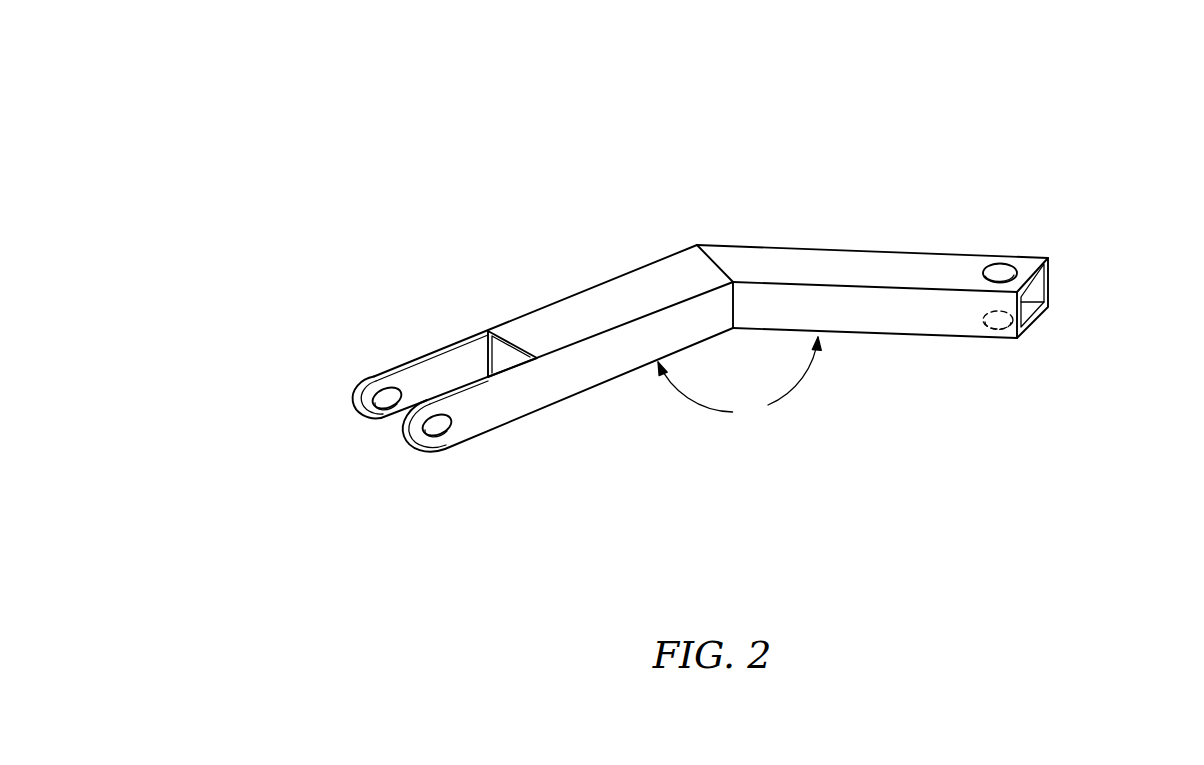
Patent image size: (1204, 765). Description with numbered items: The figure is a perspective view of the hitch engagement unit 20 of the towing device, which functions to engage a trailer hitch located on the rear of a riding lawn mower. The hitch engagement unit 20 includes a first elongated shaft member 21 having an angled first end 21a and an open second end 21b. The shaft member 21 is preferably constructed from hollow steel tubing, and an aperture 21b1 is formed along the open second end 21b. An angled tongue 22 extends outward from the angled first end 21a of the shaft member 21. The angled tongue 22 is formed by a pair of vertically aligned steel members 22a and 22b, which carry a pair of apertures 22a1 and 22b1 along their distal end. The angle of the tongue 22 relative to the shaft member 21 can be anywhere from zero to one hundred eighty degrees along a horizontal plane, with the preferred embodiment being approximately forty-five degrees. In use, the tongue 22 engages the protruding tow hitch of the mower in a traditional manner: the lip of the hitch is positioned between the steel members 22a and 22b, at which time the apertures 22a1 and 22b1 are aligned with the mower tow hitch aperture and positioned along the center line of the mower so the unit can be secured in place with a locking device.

The hitch engagement unit 20 is at (492, 95).
The first elongated shaft member 21 is at (800, 242).
The angled first end 21a is at (538, 323).
The open second end 21b is at (968, 325).
The aperture 21b1 is at (1027, 336).
The angled tongue 22 is at (496, 304).
The steel member 22a is at (425, 371).
The aperture 22a1 is at (378, 407).
The steel member 22b is at (470, 422).
The aperture 22b1 is at (430, 432).